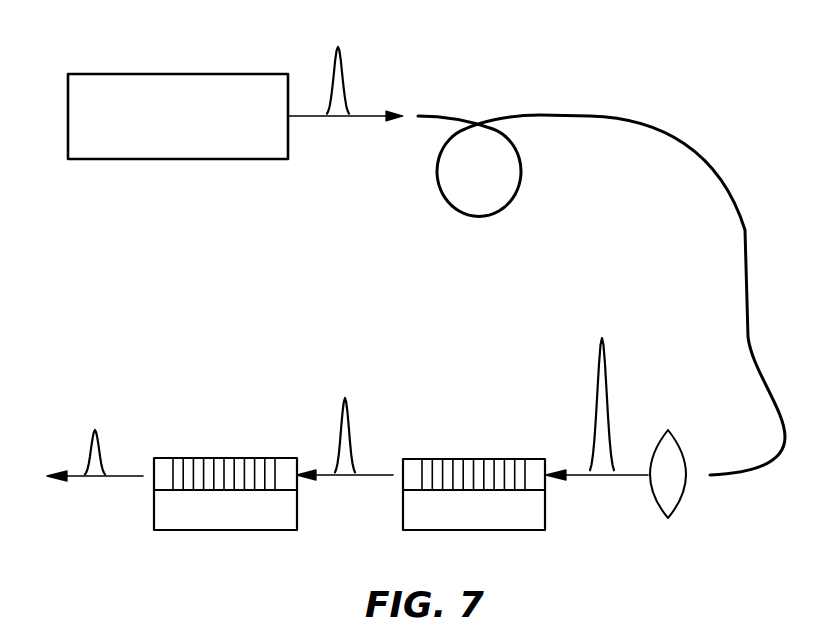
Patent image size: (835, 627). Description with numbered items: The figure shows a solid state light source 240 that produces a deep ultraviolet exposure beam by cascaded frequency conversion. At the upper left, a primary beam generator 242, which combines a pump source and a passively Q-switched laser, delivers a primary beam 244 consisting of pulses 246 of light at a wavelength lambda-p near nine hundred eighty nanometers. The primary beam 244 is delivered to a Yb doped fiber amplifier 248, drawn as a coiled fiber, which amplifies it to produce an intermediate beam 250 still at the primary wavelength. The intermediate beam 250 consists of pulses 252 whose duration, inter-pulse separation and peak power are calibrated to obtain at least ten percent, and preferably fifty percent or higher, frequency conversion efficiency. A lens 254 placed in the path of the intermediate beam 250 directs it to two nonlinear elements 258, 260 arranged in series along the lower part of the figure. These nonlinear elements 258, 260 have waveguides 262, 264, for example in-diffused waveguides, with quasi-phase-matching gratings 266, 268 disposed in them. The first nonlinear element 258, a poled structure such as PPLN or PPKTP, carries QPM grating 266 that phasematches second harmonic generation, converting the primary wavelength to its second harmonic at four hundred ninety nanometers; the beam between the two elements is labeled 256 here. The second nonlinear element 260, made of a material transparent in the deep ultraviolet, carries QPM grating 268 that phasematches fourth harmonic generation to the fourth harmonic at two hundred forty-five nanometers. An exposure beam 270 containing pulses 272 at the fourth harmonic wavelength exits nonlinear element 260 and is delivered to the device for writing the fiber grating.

The light source 240 is at (675, 70).
The primary beam generator 242 is at (117, 160).
The primary beam 244 is at (312, 117).
The pulses 246 is at (333, 70).
The Yb doped fiber amplifier 248 is at (437, 182).
The intermediate beam 250 is at (578, 477).
The pulses 252 is at (608, 385).
The lens 254 is at (675, 438).
The second harmonic beam 256 is at (352, 427).
The nonlinear element 258 is at (514, 471).
The nonlinear element 260 is at (192, 472).
The waveguide 262 is at (537, 459).
The waveguide 264 is at (287, 458).
The QPM grating 266 is at (465, 458).
The QPM grating 268 is at (215, 458).
The exposure beam 270 is at (122, 478).
The pulses 272 is at (88, 450).